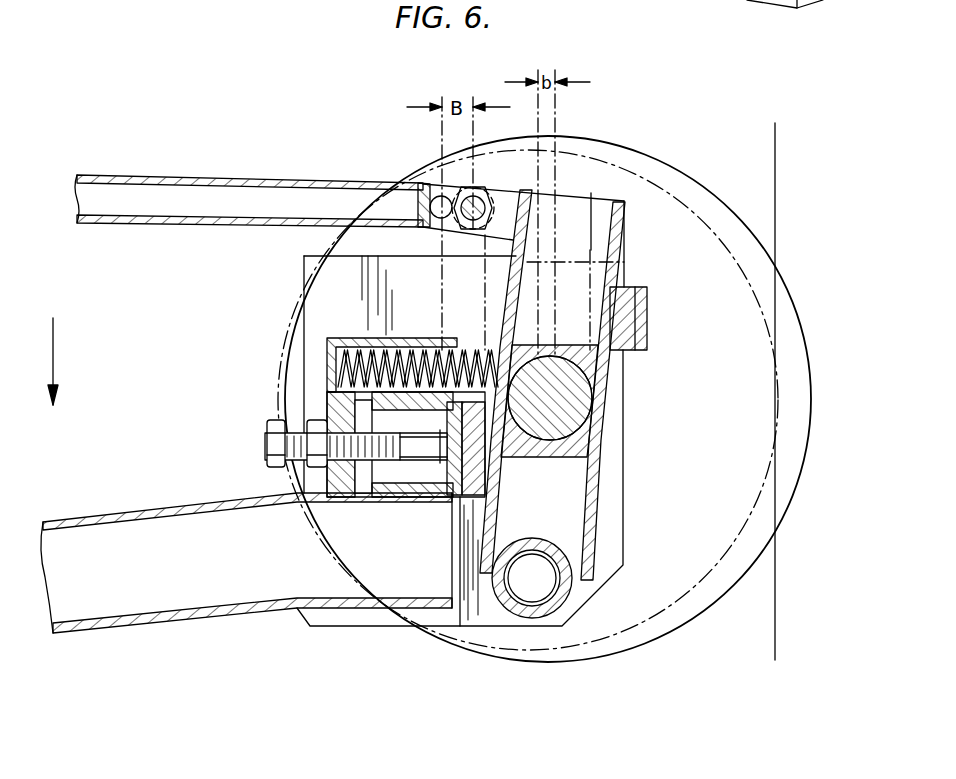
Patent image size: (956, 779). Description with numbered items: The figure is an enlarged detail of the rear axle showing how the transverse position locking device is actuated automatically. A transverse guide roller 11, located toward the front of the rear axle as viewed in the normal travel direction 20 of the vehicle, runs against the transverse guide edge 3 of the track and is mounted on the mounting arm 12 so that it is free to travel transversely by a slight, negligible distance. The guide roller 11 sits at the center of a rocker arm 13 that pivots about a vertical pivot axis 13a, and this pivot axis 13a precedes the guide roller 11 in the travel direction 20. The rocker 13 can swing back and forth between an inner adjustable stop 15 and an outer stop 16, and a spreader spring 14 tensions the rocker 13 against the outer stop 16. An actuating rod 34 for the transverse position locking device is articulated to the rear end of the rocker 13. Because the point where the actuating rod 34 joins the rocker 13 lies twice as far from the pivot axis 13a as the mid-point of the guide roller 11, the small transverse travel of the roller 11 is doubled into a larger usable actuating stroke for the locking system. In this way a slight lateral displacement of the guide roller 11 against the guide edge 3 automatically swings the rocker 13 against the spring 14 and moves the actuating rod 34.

The transverse guide edge 3 is at (777, 166).
The transverse guide roller 11 is at (515, 646).
The mounting arm 12 is at (140, 622).
The rocker arm 13 is at (624, 232).
The vertical pivot axis 13a is at (541, 592).
The spreader spring 14 is at (467, 347).
The inner adjustable stop 15 is at (436, 482).
The outer stop 16 is at (648, 314).
The normal travel direction 20 is at (54, 358).
The actuating rod 34 is at (182, 175).